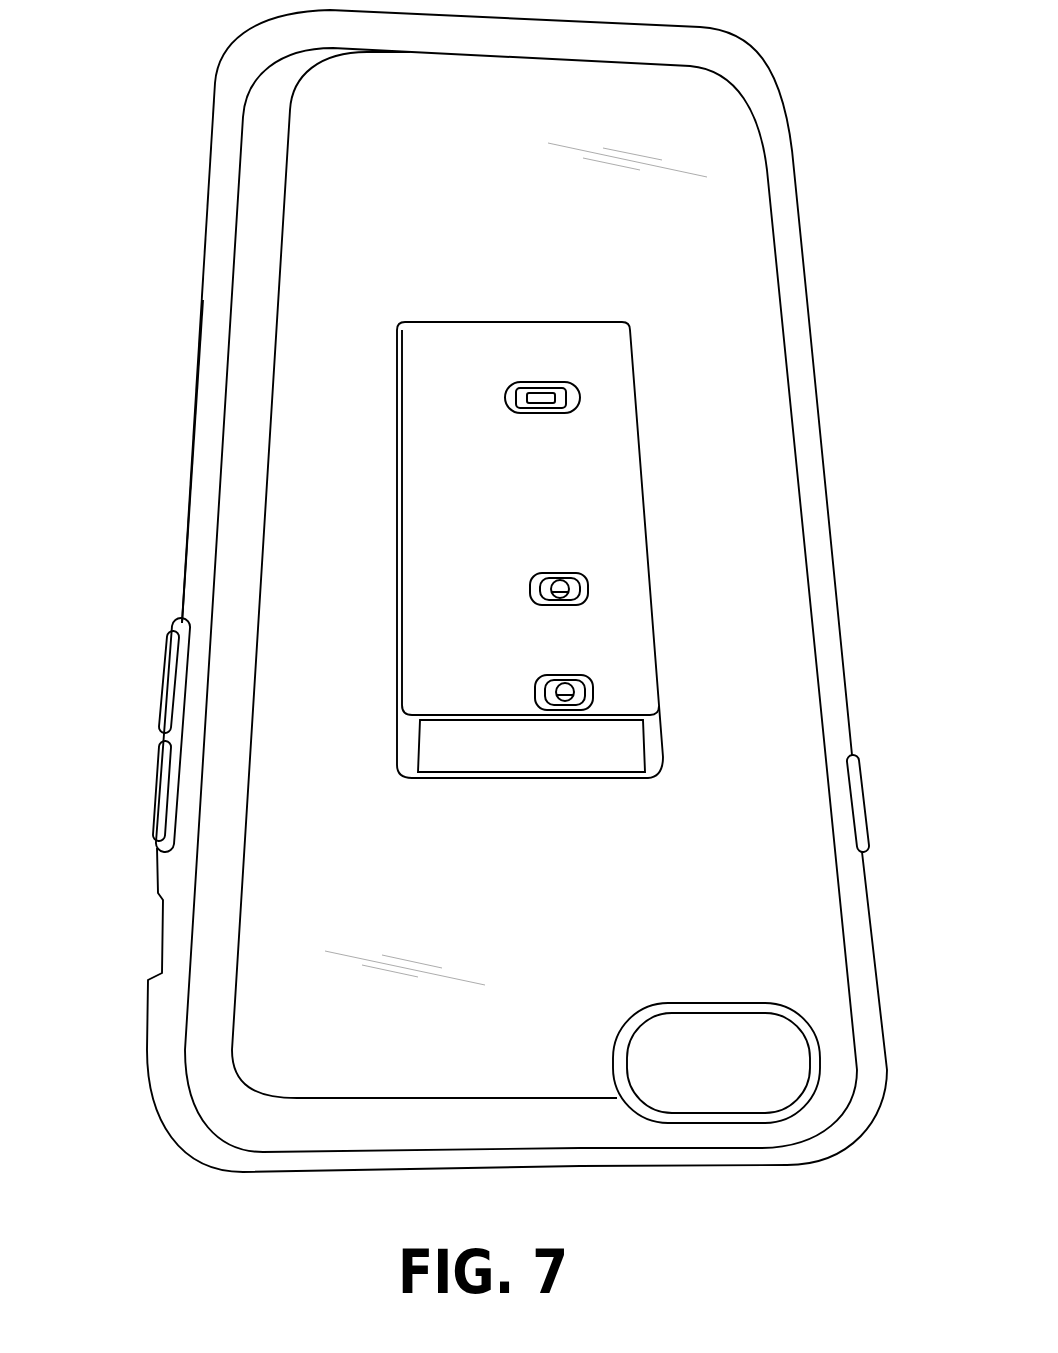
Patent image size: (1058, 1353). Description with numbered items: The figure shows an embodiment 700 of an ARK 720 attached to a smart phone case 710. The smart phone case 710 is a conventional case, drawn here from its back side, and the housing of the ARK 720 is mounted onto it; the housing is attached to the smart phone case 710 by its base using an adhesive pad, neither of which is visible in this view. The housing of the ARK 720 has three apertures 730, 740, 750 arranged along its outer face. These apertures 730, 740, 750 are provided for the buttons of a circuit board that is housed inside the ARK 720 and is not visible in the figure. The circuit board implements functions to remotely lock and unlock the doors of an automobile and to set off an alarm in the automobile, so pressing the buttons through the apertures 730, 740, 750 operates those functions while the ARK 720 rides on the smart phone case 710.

The embodiment 700 is at (128, 234).
The smart phone case 710 is at (192, 468).
The ARK 720 is at (397, 546).
The aperture 730 is at (583, 400).
The aperture 740 is at (593, 593).
The aperture 750 is at (598, 690).